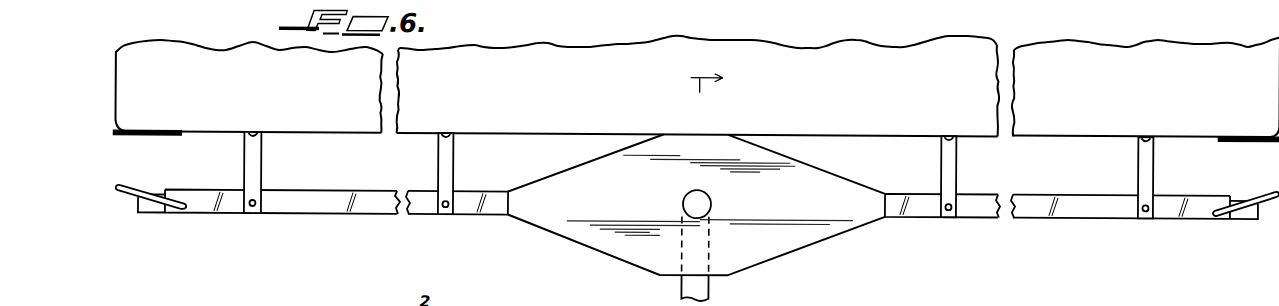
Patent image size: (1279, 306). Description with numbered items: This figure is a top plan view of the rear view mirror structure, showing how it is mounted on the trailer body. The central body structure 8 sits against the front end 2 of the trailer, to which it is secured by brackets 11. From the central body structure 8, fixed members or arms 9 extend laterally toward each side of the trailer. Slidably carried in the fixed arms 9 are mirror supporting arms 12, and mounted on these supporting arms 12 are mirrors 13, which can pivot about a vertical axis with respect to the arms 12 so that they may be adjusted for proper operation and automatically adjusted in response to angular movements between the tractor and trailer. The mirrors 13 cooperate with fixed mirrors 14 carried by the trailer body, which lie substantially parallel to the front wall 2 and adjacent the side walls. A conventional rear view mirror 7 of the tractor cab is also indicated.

The front end of the trailer body 2 is at (345, 132).
The conventional rear view mirror 7 is at (714, 84).
The central body structure 8 is at (804, 251).
The fixed members or arms 9 is at (335, 214).
The brackets 11 is at (261, 168).
The mirror supporting arms 12 is at (138, 214).
The mirrors 13 is at (133, 186).
The fixed mirrors 14 is at (148, 136).